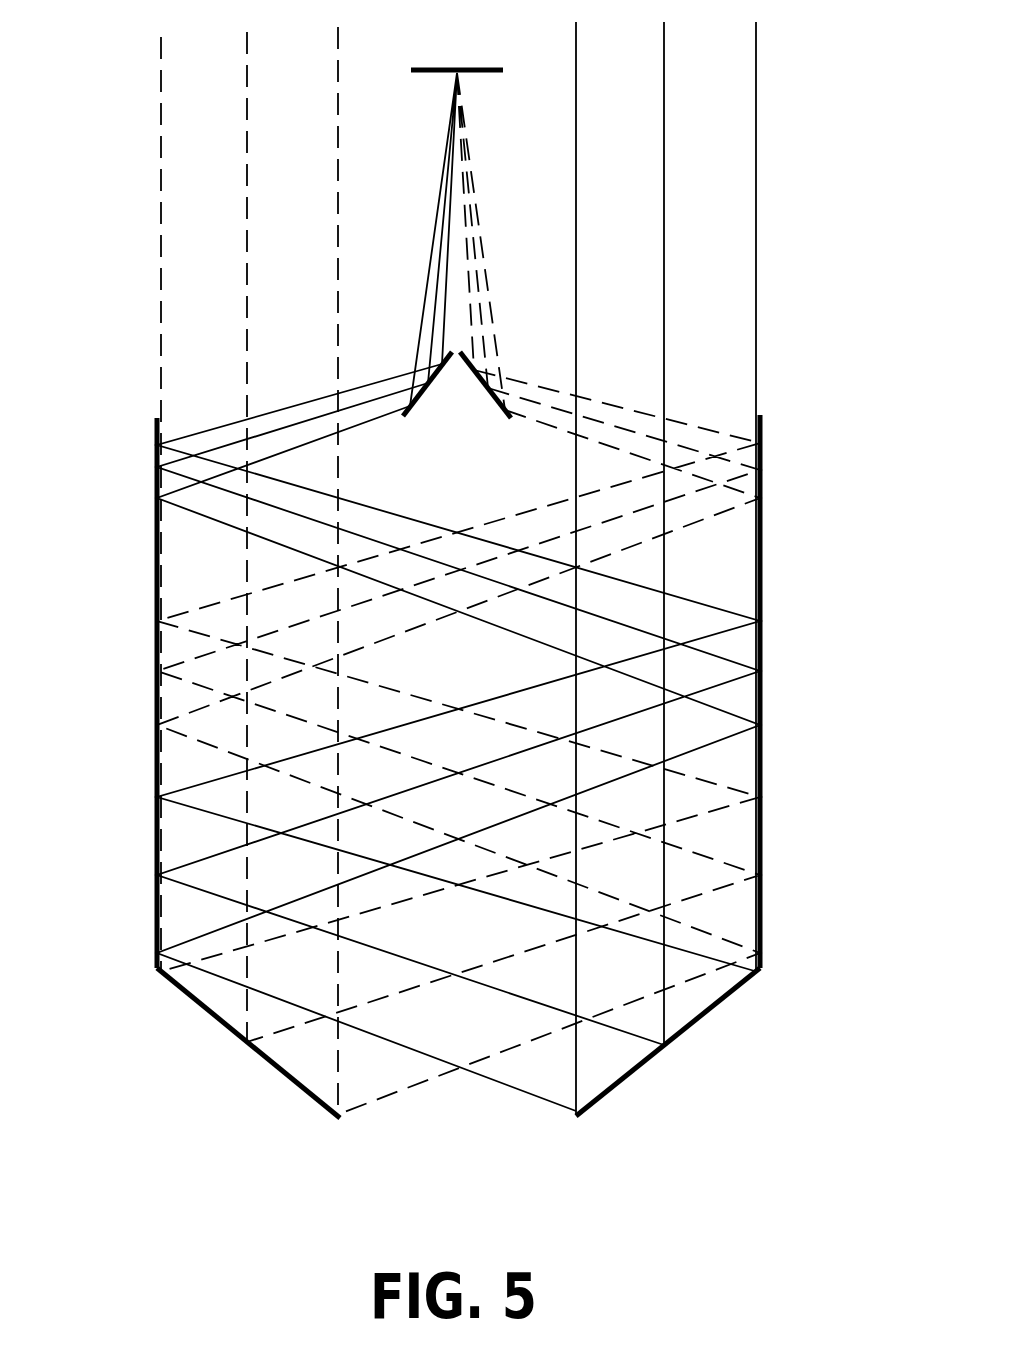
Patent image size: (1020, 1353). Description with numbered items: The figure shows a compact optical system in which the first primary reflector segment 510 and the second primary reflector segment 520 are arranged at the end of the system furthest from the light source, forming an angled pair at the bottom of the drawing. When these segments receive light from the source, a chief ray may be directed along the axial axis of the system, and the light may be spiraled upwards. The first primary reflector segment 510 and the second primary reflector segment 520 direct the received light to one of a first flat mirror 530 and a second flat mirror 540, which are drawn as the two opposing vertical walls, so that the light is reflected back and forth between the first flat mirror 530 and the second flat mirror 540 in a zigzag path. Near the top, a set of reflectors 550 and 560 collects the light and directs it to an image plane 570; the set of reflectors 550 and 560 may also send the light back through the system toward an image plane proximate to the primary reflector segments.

The first primary reflector segment 510 is at (246, 1042).
The second primary reflector segment 520 is at (688, 1027).
The first flat mirror 530 is at (157, 512).
The second flat mirror 540 is at (760, 495).
The reflector of the set of reflectors 550 is at (405, 418).
The reflector of the set of reflectors 560 is at (508, 420).
The image plane 570 is at (476, 68).